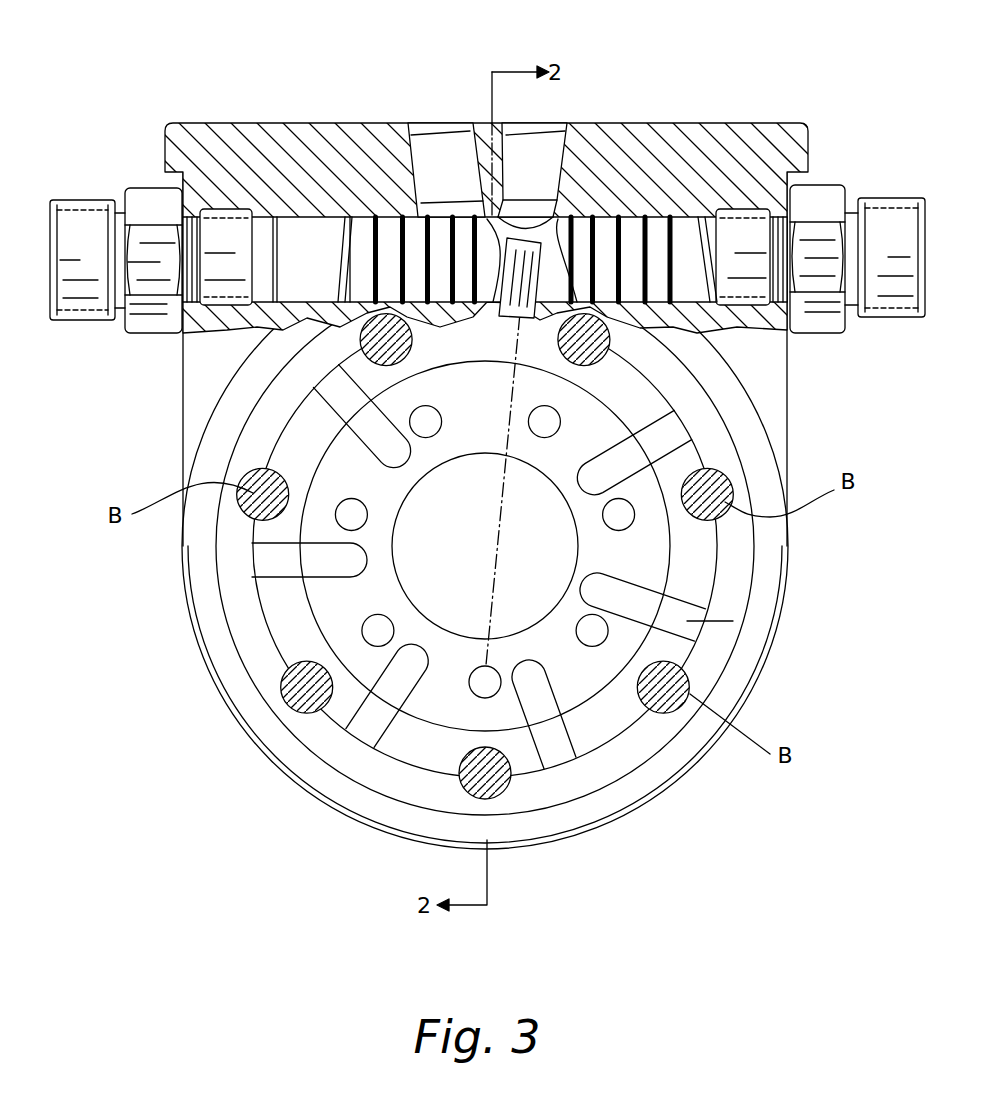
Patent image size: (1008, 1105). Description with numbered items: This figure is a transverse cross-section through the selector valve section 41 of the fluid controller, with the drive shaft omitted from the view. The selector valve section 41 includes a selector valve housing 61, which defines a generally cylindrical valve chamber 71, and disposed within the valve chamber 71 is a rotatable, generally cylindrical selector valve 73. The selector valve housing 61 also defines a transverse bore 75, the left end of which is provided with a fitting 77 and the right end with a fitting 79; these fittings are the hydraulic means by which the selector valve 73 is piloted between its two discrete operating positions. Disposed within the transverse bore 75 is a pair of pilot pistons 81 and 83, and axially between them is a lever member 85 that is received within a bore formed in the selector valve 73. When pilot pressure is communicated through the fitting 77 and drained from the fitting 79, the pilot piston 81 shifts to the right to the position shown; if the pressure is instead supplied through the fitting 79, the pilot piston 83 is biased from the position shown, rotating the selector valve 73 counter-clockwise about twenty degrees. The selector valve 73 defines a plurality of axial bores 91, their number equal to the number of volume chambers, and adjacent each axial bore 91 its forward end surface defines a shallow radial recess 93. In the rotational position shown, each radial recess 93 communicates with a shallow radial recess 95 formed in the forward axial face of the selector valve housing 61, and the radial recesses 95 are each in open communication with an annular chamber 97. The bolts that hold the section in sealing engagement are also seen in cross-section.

The selector valve section 41 is at (230, 82).
The selector valve housing 61 is at (710, 150).
The valve chamber 71 is at (320, 618).
The selector valve 73 is at (672, 552).
The transverse bore 75 is at (325, 220).
The fitting 77 is at (145, 190).
The fitting 79 is at (830, 185).
The pilot piston 81 is at (438, 234).
The pilot piston 83 is at (625, 238).
The lever member 85 is at (530, 273).
The axial bores 91 is at (535, 432).
The radial recess 93 is at (393, 447).
The radial recess 95 is at (323, 369).
The annular chamber 97 is at (612, 766).